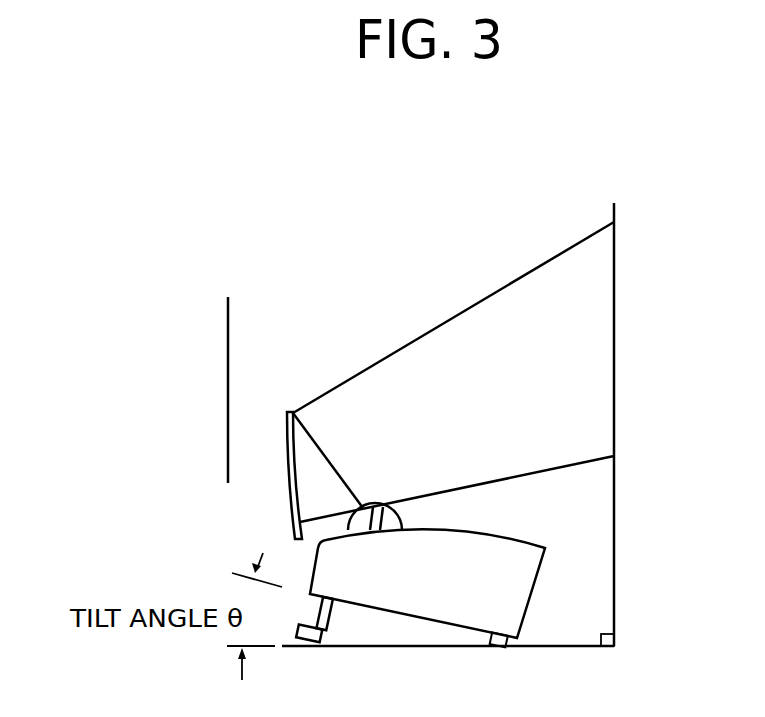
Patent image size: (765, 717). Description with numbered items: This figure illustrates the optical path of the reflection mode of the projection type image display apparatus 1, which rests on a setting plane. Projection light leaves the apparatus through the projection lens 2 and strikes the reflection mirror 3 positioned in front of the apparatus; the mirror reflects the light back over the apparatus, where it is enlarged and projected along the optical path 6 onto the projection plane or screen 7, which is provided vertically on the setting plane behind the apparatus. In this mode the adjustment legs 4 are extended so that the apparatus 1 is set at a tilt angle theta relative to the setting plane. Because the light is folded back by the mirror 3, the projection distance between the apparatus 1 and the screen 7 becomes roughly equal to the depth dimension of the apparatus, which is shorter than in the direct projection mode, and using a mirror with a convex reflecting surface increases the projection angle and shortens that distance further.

The projection type image display apparatus 1 is at (388, 613).
The projection lens 2 is at (387, 518).
The reflection mirror 3 is at (287, 459).
The adjustment legs 4 is at (305, 637).
The optical path 6 is at (412, 342).
The projection plane (screen) 7 is at (614, 296).